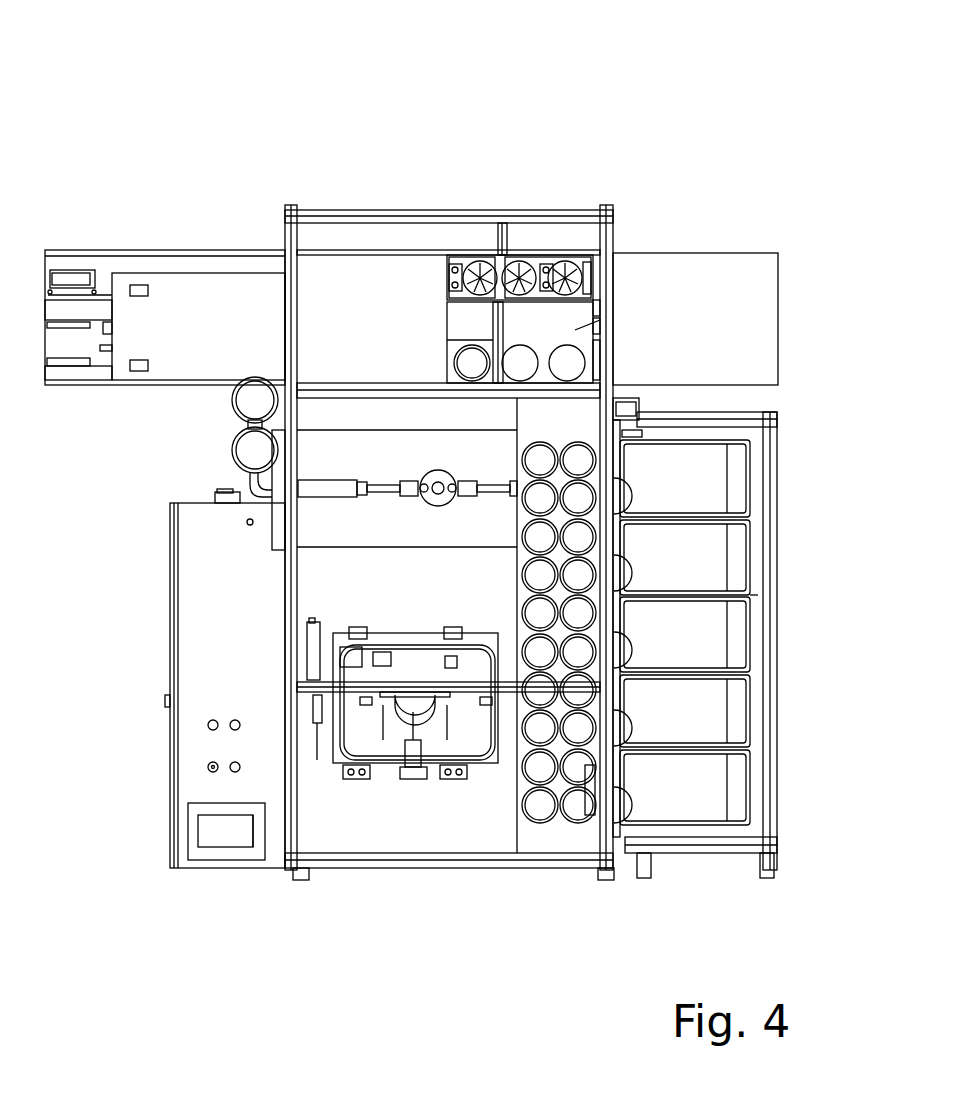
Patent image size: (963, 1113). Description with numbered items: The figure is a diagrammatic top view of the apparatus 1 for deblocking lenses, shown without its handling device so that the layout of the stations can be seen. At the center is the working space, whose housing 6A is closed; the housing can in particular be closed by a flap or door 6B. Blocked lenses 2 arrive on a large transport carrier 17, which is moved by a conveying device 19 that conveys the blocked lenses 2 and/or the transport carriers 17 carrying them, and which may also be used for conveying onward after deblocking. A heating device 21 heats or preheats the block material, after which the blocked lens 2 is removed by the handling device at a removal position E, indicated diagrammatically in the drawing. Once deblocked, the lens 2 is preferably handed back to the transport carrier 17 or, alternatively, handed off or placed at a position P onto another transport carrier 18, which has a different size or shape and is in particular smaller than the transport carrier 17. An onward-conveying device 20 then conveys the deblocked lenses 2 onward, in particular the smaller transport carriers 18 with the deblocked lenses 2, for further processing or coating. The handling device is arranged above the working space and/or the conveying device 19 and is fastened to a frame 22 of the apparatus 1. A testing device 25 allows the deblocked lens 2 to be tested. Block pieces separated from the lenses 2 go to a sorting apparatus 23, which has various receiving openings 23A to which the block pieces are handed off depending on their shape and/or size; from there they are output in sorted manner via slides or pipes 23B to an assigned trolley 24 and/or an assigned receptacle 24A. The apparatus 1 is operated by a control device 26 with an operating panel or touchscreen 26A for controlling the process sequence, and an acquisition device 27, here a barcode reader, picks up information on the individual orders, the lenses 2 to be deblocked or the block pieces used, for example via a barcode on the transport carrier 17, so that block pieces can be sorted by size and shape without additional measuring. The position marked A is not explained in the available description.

The apparatus 1 is at (128, 135).
The lens 2 is at (472, 345).
The housing 6A is at (360, 742).
The flap or door 6B is at (435, 740).
The transport carrier 17 is at (600, 327).
The transport carrier 18 is at (586, 298).
The conveying device 19 is at (88, 366).
The onward-conveying device 20 is at (463, 250).
The heating device 21 is at (205, 318).
The frame 22 is at (512, 253).
The sorting apparatus 23 is at (580, 736).
The receiving openings 23A is at (542, 825).
The slides or pipes 23B is at (625, 575).
The trolley 24 is at (778, 632).
The receptacle 24A is at (712, 757).
The testing device 25 is at (435, 470).
The control device 26 is at (205, 628).
The operating panel or touchscreen 26A is at (222, 831).
The acquisition device 27 is at (64, 278).
The position P is at (522, 262).
The removal position E is at (600, 308).
The outlet A is at (600, 372).